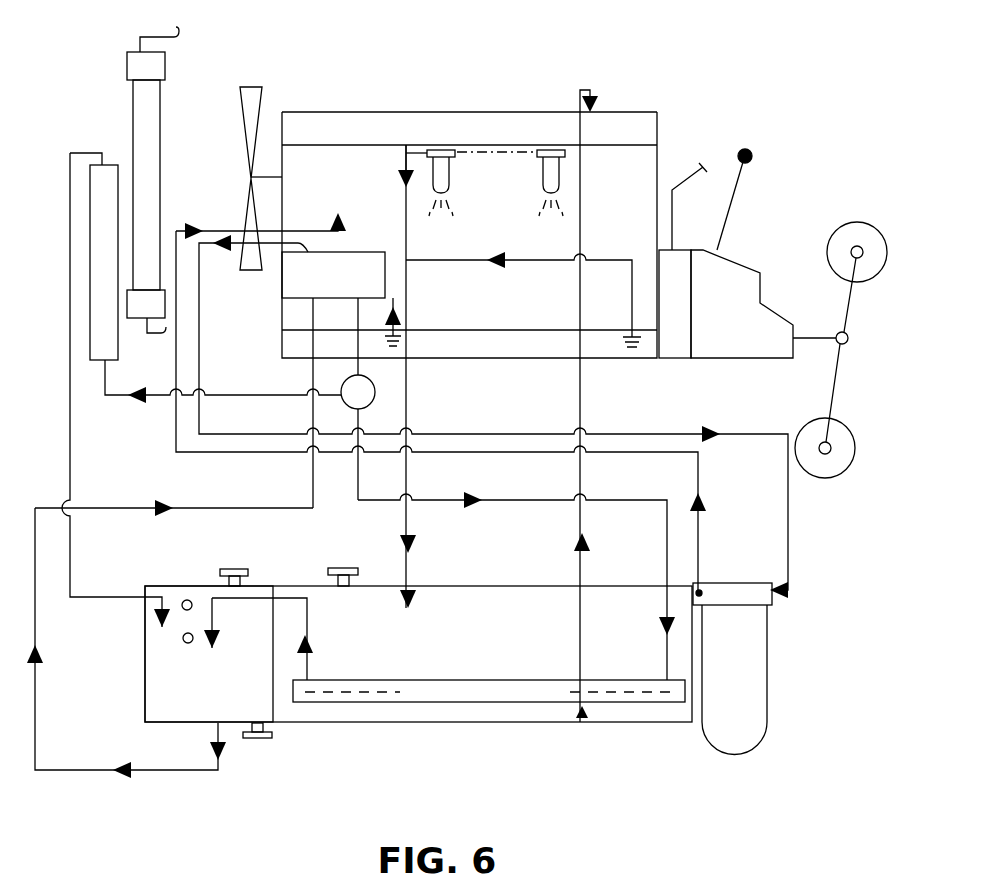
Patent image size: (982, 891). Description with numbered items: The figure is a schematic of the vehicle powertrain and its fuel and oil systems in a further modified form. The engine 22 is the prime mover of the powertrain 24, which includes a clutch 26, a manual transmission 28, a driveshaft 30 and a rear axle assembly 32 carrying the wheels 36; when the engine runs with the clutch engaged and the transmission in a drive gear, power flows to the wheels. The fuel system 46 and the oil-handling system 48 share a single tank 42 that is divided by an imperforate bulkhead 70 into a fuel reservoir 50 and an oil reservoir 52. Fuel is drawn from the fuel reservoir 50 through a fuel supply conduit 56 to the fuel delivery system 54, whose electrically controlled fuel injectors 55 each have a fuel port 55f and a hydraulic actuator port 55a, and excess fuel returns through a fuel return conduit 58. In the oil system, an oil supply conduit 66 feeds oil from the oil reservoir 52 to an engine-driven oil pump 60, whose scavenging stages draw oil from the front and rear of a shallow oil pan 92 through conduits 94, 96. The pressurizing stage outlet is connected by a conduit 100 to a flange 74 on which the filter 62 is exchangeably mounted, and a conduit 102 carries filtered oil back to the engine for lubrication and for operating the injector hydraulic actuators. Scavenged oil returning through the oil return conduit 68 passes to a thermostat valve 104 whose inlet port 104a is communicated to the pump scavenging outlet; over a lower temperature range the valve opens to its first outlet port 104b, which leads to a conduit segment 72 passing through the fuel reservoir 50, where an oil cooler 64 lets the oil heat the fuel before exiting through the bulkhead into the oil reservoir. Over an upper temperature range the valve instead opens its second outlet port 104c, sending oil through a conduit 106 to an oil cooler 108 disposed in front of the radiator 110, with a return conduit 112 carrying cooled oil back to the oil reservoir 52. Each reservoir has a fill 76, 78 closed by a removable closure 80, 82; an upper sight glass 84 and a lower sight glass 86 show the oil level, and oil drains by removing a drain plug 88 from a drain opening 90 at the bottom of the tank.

The engine 22 is at (507, 230).
The powertrain 24 is at (640, 322).
The clutch 26 is at (712, 199).
The manual transmission 28 is at (742, 322).
The driveshaft 30 is at (799, 362).
The rear axle assembly 32 is at (820, 316).
The wheels 36 is at (815, 350).
The tank 42 is at (418, 540).
The fuel system 46 is at (469, 212).
The second fluid system 48 is at (262, 403).
The fuel reservoir 50 is at (472, 599).
The oil reservoir 52 is at (186, 634).
The fuel delivery system 54 is at (469, 85).
The fuel injectors 55 is at (486, 193).
The hydraulic actuator port 55a is at (503, 129).
The fuel port 55f is at (496, 191).
The fuel supply conduit 56 is at (553, 417).
The fuel return conduit 58 is at (459, 423).
The oil pump 60 is at (301, 282).
The filter 62 is at (760, 677).
The oil cooler 64 is at (489, 721).
The oil supply conduit 66 is at (174, 495).
The oil return conduit 68 is at (516, 586).
The bulkhead 70 is at (316, 550).
The conduit segment 72 is at (435, 640).
The flange 74 is at (732, 570).
The fill 76 is at (250, 553).
The fill 78 is at (361, 559).
The removable closure 80 is at (203, 552).
The removable closure 82 is at (362, 539).
The upper sight glass 84 is at (135, 621).
The lower sight glass 86 is at (136, 652).
The drain plug 88 is at (153, 643).
The drain opening 90 is at (287, 737).
The shallow oil pan 92 is at (489, 363).
The conduit 94 is at (422, 315).
The conduit 96 is at (523, 299).
The conduit 100 is at (493, 416).
The conduit 102 is at (479, 404).
The thermostat valve 104 is at (402, 399).
The inlet port 104a is at (279, 380).
The first outlet port 104b is at (441, 405).
The second outlet port 104c is at (279, 416).
The conduit 106 is at (218, 399).
The oil cooler 108 is at (119, 269).
The radiator 110 is at (181, 180).
The return conduit 112 is at (116, 390).